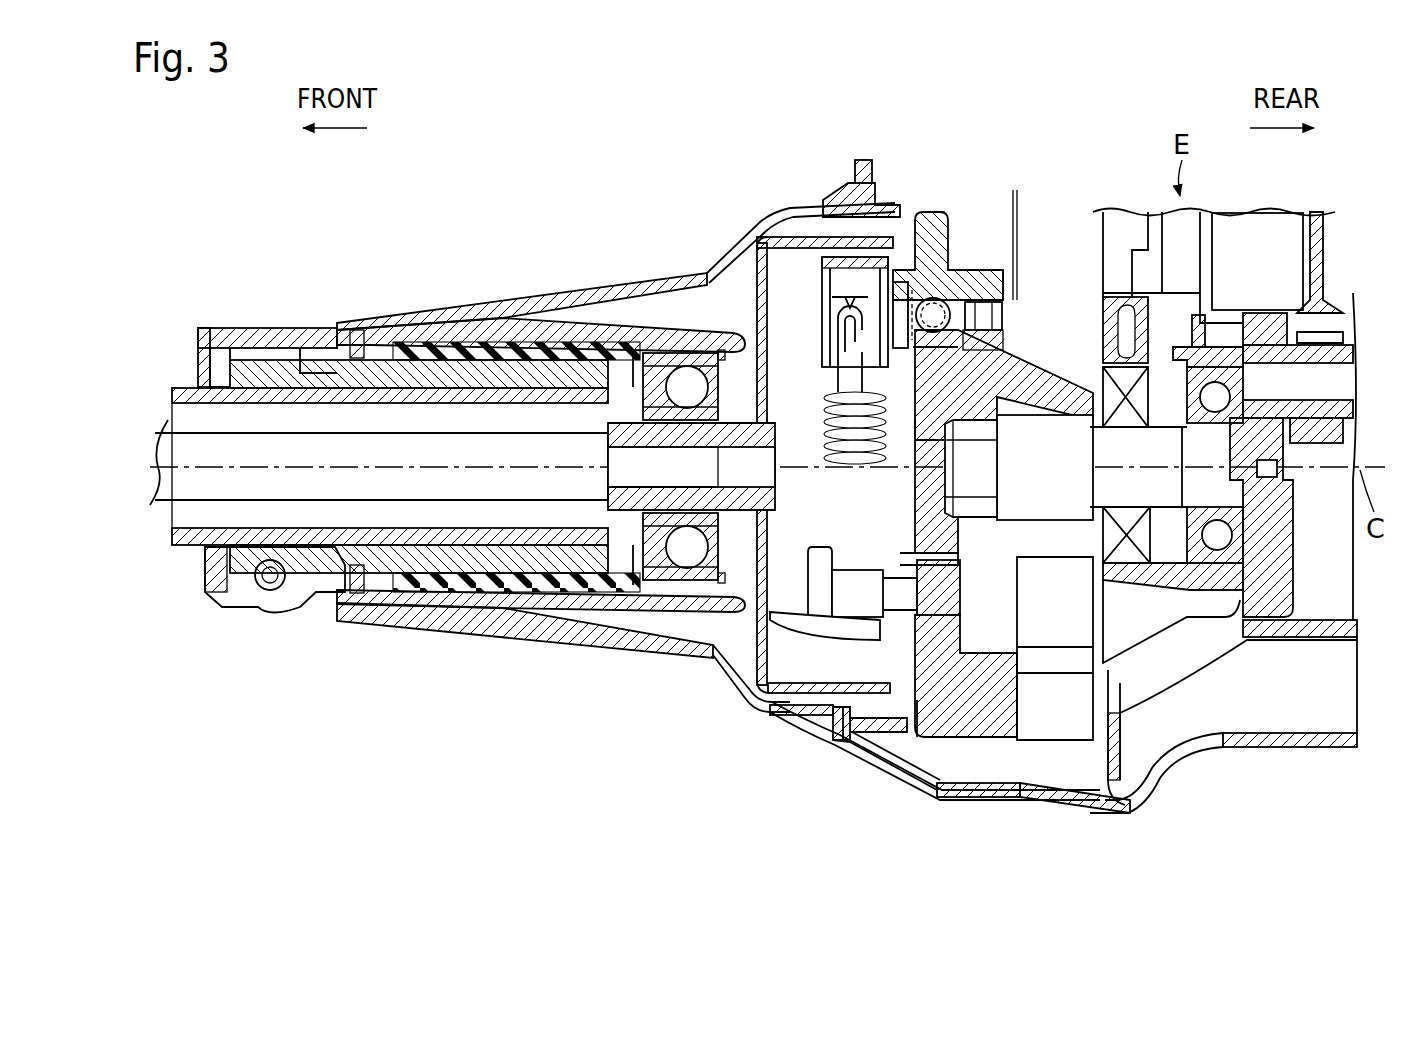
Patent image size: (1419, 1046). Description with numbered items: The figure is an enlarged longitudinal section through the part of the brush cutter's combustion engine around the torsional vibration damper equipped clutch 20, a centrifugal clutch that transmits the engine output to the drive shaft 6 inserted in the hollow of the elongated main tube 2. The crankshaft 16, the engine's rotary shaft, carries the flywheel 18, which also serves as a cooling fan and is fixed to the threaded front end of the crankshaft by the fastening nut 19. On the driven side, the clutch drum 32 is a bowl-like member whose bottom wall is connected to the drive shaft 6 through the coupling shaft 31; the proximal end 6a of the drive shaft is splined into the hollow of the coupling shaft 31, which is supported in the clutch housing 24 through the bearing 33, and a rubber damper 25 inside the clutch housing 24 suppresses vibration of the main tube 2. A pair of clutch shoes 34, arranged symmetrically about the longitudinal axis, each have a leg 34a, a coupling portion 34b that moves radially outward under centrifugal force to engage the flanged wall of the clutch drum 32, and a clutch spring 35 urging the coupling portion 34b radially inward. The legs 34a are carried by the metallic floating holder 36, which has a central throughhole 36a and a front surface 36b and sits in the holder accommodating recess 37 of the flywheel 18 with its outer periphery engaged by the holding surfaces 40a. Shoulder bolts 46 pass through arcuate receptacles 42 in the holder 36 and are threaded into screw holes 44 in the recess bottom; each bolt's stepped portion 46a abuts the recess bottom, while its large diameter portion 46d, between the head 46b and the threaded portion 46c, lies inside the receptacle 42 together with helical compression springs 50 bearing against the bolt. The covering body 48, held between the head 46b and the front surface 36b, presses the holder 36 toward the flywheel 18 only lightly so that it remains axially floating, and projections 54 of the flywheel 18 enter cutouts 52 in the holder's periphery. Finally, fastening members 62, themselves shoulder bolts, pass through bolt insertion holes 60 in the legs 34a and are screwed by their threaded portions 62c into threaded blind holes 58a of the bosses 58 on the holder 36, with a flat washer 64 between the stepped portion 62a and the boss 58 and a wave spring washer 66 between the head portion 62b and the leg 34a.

The main tube 2 is at (188, 538).
The drive shaft 6 is at (168, 448).
The proximal end 6a is at (567, 565).
The crankshaft 16 is at (1108, 568).
The flywheel 18 is at (1000, 745).
The fastening nut 19 is at (963, 508).
The torsional vibration damper equipped clutch 20 is at (740, 338).
The clutch housing 24 is at (588, 289).
The damper 25 is at (420, 595).
The coupling shaft 31 is at (725, 590).
The clutch drum 32 is at (773, 222).
The bearing 33 is at (668, 352).
The clutch shoes 34 is at (812, 382).
The leg 34a is at (778, 717).
The coupling portion 34b is at (835, 255).
The clutch spring 35 is at (828, 440).
The floating holder 36 is at (940, 352).
The throughhole 36a is at (920, 550).
The front surface 36b is at (918, 440).
The holder accommodating recess 37 is at (952, 760).
The holding surfaces 40a is at (945, 300).
The arcuate receptacle 42 is at (945, 302).
The screw holes 44 is at (992, 302).
The shoulder bolt 46 is at (918, 240).
The stepped portion 46a is at (962, 300).
The head 46b is at (892, 288).
The threaded portion 46c is at (1003, 318).
The large diameter portion 46d is at (938, 268).
The covering body 48 is at (903, 280).
The helical compression springs 50 is at (913, 348).
The cutouts 52 is at (970, 610).
The projections 54 is at (930, 745).
The bosses 58 is at (877, 737).
The threaded blind hole 58a is at (850, 755).
The bolt insertion holes 60 is at (777, 672).
The fastening members 62 is at (812, 628).
The stepped portion 62a is at (860, 719).
The head portion 62b is at (820, 590).
The threaded portion 62c is at (920, 590).
The flat washer 64 is at (778, 780).
The wave spring washer 66 is at (827, 562).